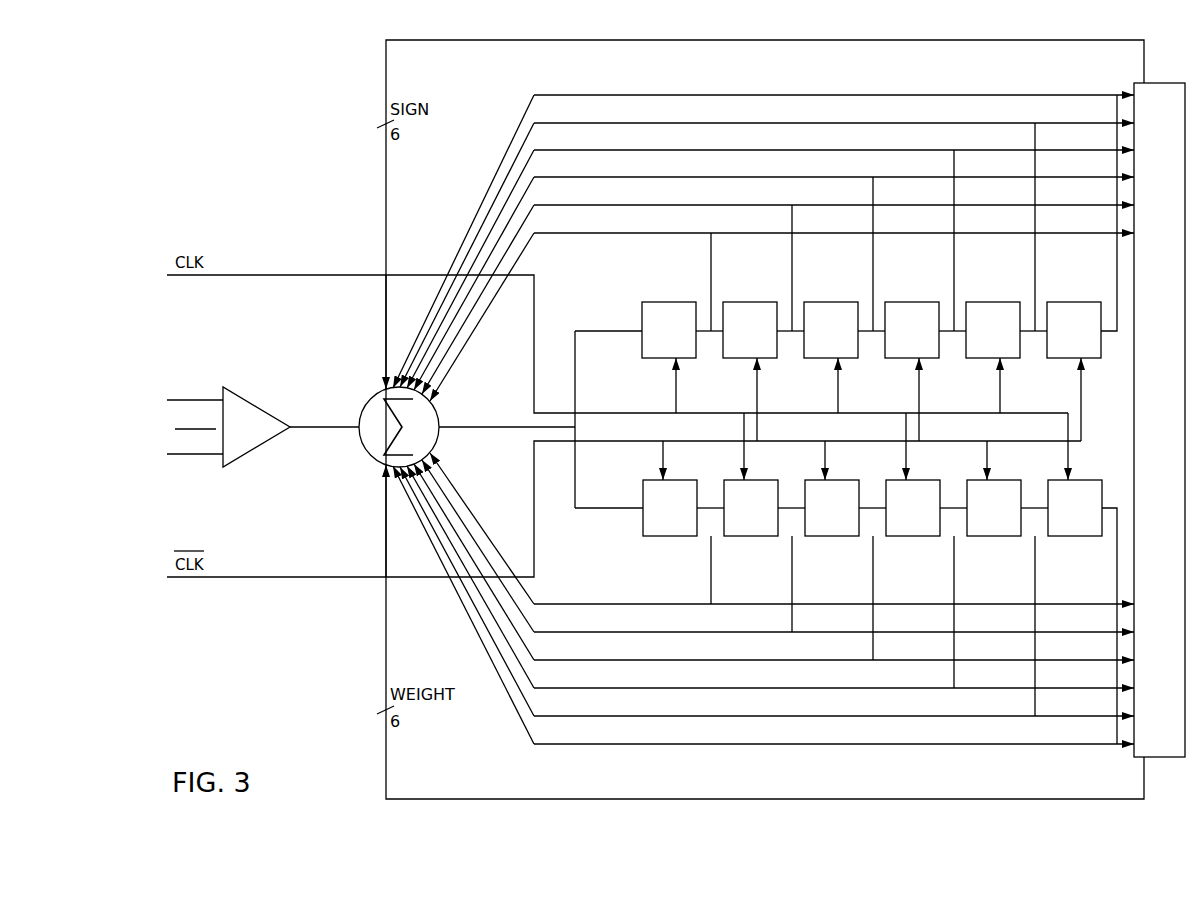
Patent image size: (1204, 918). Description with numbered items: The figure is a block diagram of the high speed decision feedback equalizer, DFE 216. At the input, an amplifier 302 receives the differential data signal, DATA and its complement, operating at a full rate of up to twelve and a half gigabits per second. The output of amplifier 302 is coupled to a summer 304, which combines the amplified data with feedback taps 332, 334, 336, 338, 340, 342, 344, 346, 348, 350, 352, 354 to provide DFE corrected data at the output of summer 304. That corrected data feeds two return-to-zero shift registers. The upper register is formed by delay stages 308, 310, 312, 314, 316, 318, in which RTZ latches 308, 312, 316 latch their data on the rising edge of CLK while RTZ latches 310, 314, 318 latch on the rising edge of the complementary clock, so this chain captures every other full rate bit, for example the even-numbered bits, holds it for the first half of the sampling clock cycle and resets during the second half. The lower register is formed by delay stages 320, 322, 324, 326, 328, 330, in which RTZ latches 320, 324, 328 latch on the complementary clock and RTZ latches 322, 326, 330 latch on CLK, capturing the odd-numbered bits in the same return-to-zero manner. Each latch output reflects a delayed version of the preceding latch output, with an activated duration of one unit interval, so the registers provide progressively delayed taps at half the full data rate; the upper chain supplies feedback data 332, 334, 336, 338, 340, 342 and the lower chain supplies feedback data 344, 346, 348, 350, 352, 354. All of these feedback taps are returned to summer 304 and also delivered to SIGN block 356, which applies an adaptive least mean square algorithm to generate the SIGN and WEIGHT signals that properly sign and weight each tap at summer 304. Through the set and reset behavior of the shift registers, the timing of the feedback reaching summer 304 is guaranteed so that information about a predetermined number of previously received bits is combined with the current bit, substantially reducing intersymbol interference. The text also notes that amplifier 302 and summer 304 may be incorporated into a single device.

The DFE 216 is at (240, 167).
The amplifier 302 is at (263, 410).
The summer 304 is at (343, 429).
The RTZ latch 308 is at (684, 302).
The RTZ latch 310 is at (765, 302).
The RTZ latch 312 is at (846, 302).
The RTZ latch 314 is at (927, 302).
The RTZ latch 316 is at (1008, 302).
The RTZ latch 318 is at (1089, 302).
The RTZ latch 320 is at (658, 479).
The RTZ latch 322 is at (739, 479).
The RTZ latch 324 is at (820, 479).
The RTZ latch 326 is at (901, 479).
The RTZ latch 328 is at (982, 479).
The RTZ latch 330 is at (1063, 479).
The feedback tap 332 is at (600, 233).
The feedback tap 334 is at (600, 205).
The feedback tap 336 is at (600, 177).
The feedback tap 338 is at (600, 150).
The feedback tap 340 is at (600, 123).
The feedback tap 342 is at (600, 95).
The feedback tap 344 is at (600, 604).
The feedback tap 346 is at (600, 632).
The feedback tap 348 is at (600, 660).
The feedback tap 350 is at (600, 688).
The feedback tap 352 is at (600, 716).
The feedback tap 354 is at (600, 744).
The SIGN block 356 is at (1133, 410).